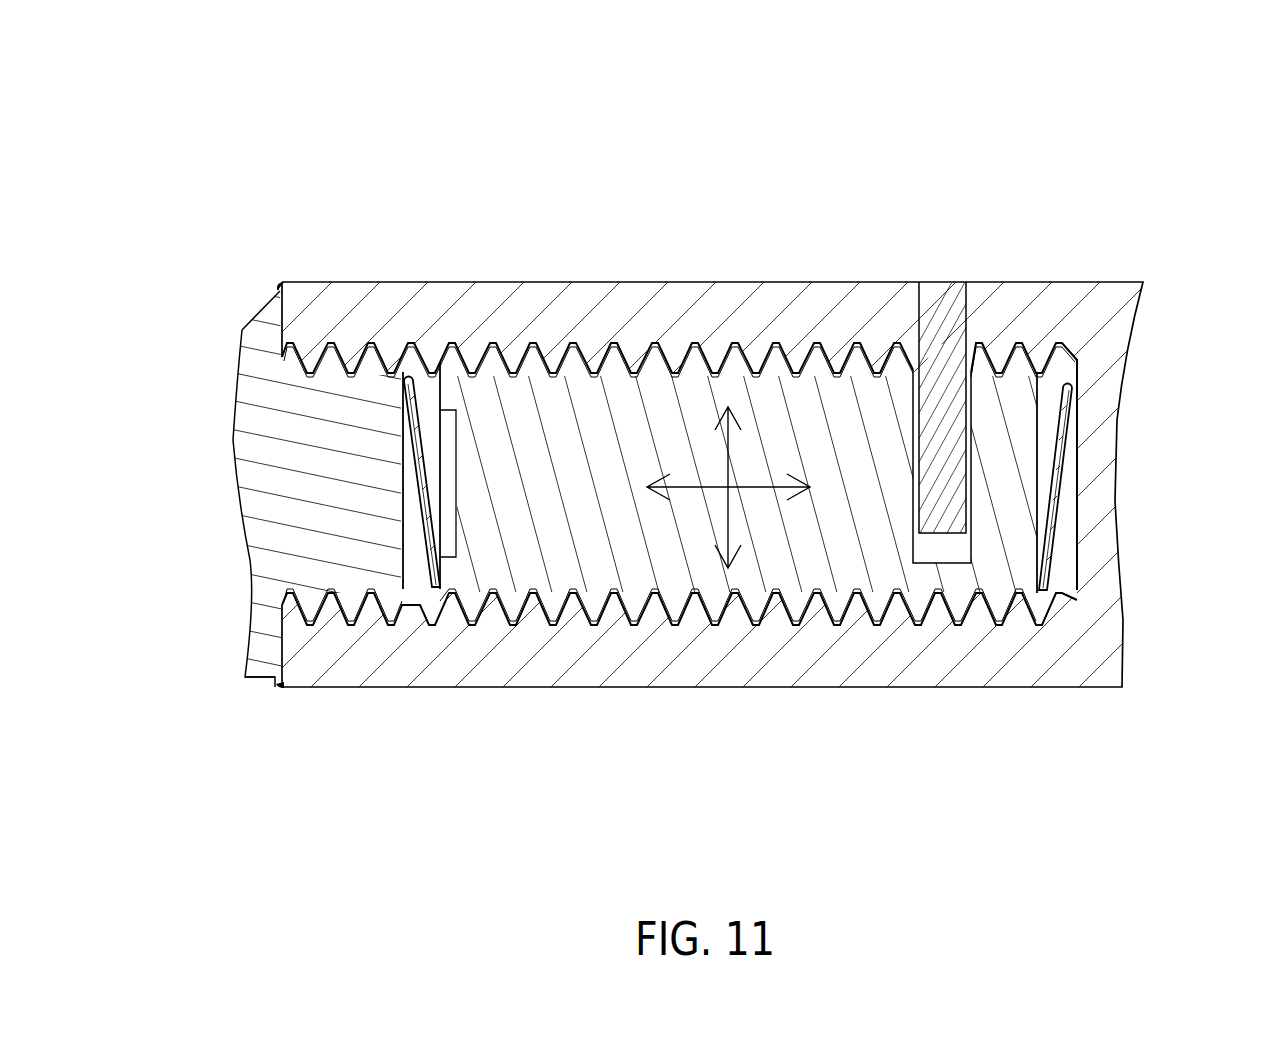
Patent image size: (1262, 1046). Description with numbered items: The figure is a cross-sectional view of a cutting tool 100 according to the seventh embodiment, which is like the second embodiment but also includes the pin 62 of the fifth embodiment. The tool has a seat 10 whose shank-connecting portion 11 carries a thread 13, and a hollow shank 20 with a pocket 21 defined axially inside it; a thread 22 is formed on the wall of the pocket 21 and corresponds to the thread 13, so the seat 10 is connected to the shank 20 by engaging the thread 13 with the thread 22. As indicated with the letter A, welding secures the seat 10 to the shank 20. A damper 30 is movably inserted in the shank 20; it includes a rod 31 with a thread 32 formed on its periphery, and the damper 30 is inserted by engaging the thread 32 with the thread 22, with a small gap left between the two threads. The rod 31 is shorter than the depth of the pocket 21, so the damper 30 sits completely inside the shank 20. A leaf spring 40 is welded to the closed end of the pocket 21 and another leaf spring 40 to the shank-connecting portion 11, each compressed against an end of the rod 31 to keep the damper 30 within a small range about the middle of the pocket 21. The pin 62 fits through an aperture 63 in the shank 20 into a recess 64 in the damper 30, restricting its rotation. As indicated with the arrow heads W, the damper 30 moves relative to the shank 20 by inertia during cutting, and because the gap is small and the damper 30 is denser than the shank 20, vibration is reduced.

The cutting tool 100 is at (1160, 195).
The seat 10 is at (262, 440).
The shank-connecting portion 11 is at (355, 525).
The thread 13 is at (332, 368).
The shank 20 is at (953, 652).
The pocket 21 is at (1055, 340).
The thread 22 is at (1027, 618).
The damper 30 is at (738, 625).
The rod 31 is at (620, 385).
The thread 32 is at (747, 345).
The leaf spring 40 is at (413, 372).
The pin 62 is at (978, 357).
The aperture 63 is at (938, 310).
The recess 64 is at (962, 546).
The arrow heads W is at (730, 452).
The welding A is at (275, 690).